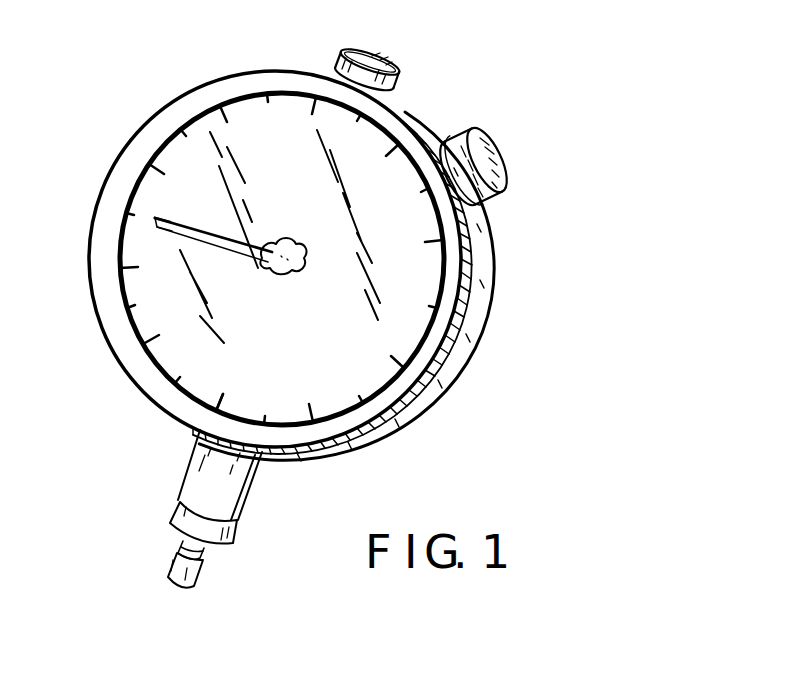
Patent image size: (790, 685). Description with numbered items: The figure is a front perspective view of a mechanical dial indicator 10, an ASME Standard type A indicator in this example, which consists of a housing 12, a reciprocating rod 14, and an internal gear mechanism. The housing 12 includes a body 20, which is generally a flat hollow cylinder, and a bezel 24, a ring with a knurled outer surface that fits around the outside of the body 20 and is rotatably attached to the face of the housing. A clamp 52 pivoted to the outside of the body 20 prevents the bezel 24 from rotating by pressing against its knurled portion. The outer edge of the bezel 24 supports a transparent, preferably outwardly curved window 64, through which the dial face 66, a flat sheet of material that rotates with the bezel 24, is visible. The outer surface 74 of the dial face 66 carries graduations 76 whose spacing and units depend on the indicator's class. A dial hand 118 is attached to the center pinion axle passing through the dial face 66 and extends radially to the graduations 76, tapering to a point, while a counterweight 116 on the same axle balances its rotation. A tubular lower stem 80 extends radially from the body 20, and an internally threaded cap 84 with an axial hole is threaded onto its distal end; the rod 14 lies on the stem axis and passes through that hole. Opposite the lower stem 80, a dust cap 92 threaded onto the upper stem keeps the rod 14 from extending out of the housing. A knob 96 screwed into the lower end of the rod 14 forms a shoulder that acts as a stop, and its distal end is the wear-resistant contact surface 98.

The mechanical dial indicator 10 is at (545, 98).
The housing 12 is at (493, 300).
The reciprocating rod 14 is at (213, 549).
The body 20 is at (487, 263).
The bezel 24 is at (456, 334).
The clamp 52 is at (451, 142).
The transparent window 64 is at (157, 227).
The dial face 66 is at (357, 352).
The outer surface of the dial face 74 is at (332, 326).
The graduations 76 is at (217, 392).
The lower stem 80 is at (197, 470).
The cap 84 is at (240, 527).
The dust cap 92 is at (378, 55).
The knob 96 is at (172, 557).
The contact surface 98 is at (175, 585).
The counterweight 116 is at (305, 251).
The dial hand 118 is at (168, 222).